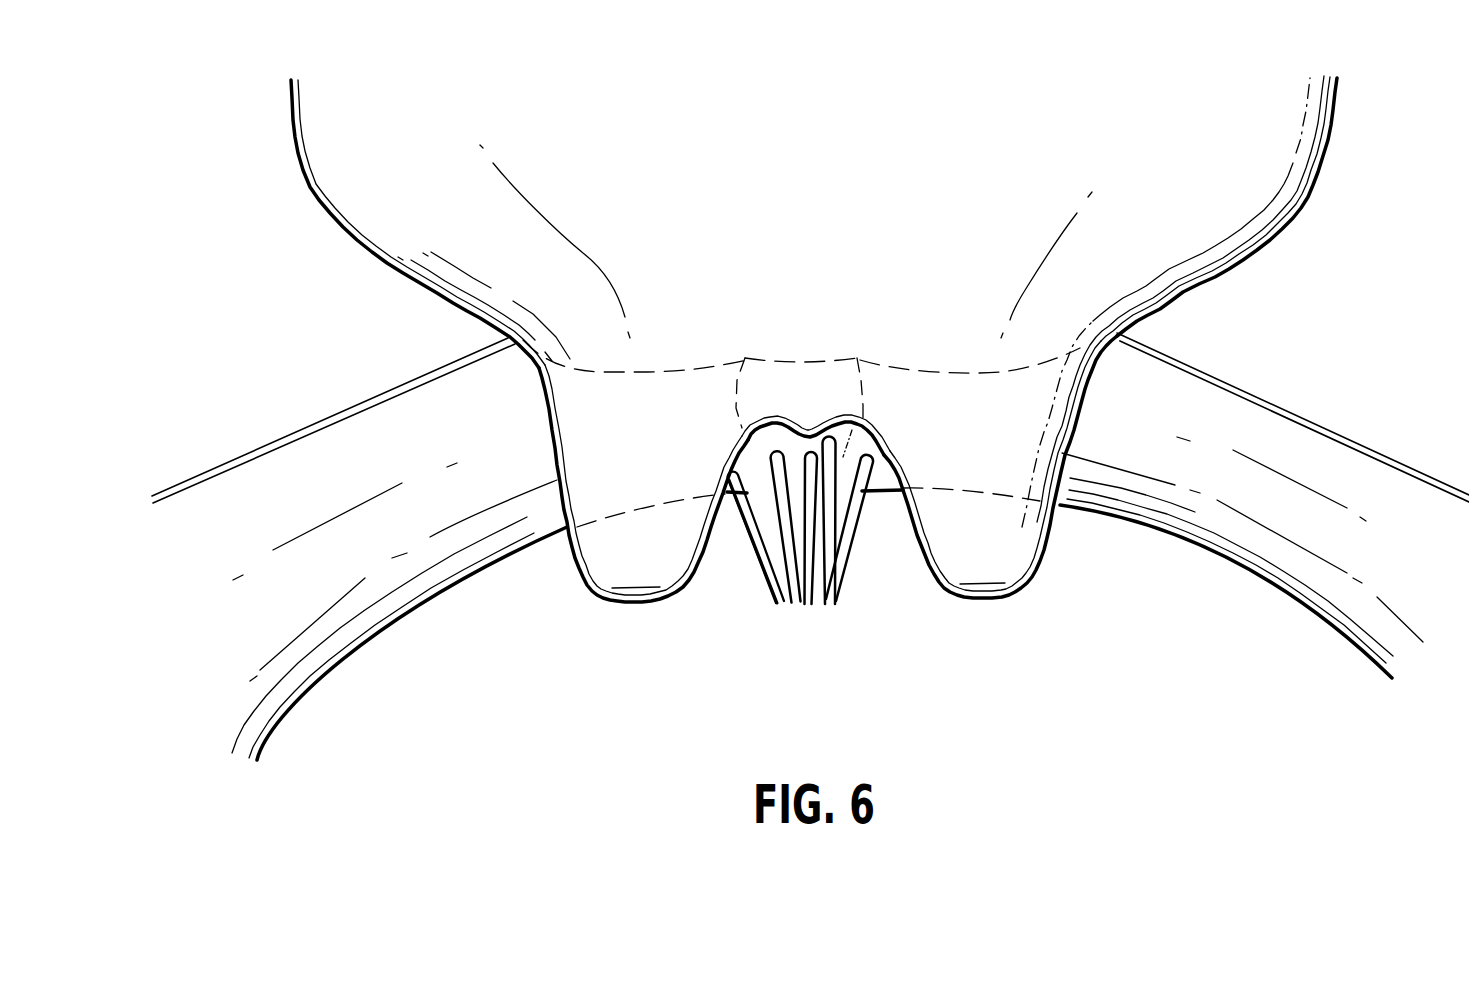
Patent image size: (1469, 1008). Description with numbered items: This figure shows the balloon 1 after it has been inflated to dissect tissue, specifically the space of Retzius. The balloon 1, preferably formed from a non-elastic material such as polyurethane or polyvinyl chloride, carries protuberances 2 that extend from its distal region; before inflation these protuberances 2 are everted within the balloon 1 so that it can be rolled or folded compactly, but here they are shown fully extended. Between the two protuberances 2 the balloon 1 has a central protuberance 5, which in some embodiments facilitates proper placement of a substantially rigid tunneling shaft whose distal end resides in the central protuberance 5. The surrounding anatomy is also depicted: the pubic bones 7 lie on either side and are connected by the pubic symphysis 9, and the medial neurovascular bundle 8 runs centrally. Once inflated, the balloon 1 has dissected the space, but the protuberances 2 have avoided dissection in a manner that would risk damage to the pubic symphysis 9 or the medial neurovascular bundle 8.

The balloon 1 is at (1340, 133).
The protuberances 2 is at (633, 604).
The central protuberance 5 is at (866, 395).
The pubic bones 7 is at (313, 420).
The medial neurovascular bundle 8 is at (852, 522).
The pubic symphysis 9 is at (833, 392).